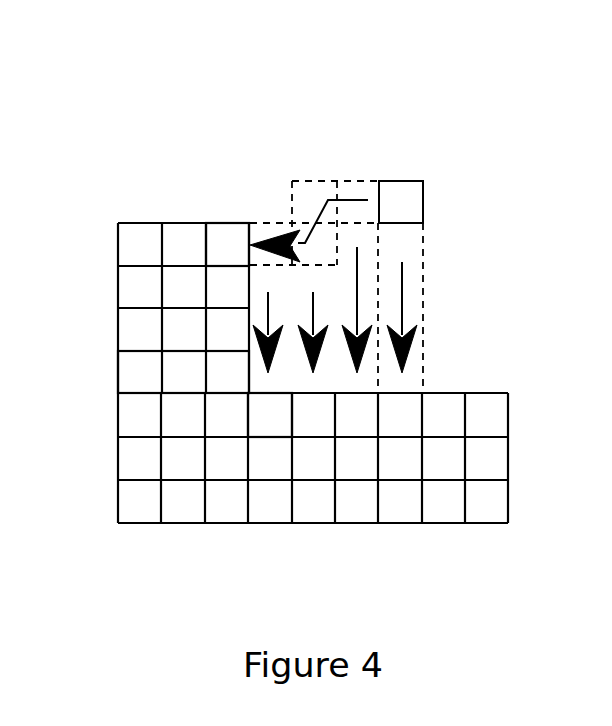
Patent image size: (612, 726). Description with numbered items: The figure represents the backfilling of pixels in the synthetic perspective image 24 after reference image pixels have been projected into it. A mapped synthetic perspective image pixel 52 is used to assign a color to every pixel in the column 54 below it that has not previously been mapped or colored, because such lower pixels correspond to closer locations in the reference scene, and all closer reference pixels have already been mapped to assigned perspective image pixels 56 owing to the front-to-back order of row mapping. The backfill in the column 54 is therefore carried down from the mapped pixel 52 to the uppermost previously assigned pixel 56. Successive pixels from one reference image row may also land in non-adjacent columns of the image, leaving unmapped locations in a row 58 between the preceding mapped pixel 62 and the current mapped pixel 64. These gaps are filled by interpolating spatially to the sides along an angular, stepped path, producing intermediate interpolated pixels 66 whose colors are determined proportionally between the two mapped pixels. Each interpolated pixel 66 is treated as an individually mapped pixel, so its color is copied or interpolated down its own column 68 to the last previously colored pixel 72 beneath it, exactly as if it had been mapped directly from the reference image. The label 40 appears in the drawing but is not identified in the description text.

The synthetic perspective image 24 is at (442, 112).
The memory array 40 is at (106, 375).
The mapped synthetic perspective image pixel 52 is at (410, 203).
The column 54 is at (402, 168).
The assigned perspective image pixels 56 is at (407, 413).
The row of synthetic perspective image pixels 58 is at (107, 241).
The preceding mapped synthetic perspective image pixel 62 is at (218, 233).
The current mapped synthetic perspective image pixel 64 is at (318, 240).
The intermediate interpolated reference image pixels 66 is at (265, 232).
The column 68 is at (280, 523).
The reference image pixel previously assigned a color 72 is at (267, 420).